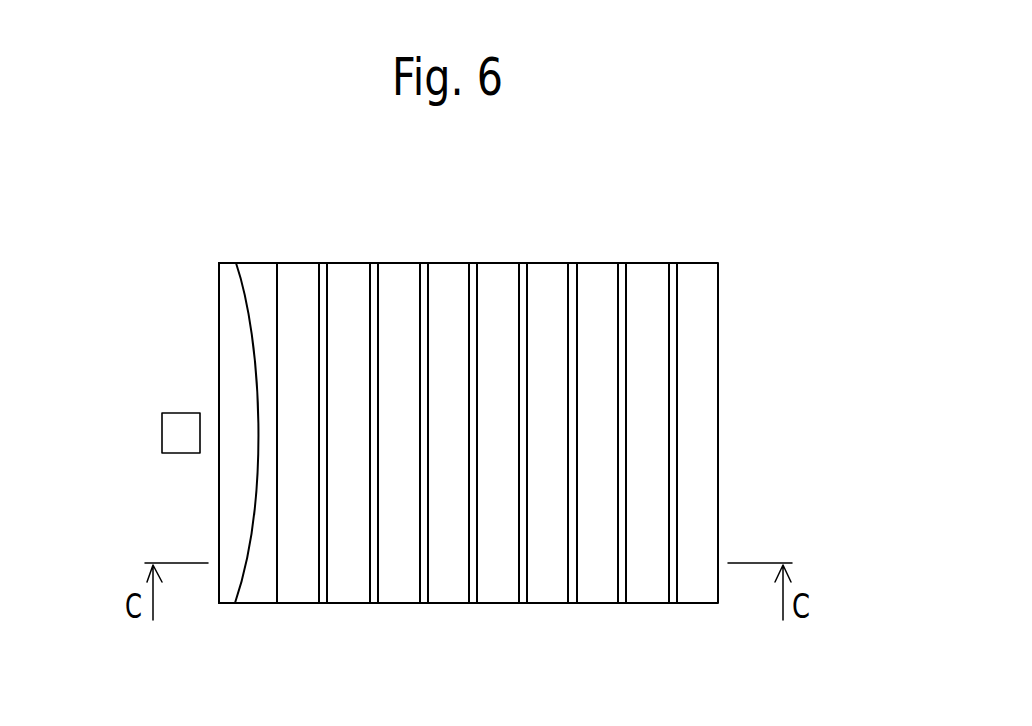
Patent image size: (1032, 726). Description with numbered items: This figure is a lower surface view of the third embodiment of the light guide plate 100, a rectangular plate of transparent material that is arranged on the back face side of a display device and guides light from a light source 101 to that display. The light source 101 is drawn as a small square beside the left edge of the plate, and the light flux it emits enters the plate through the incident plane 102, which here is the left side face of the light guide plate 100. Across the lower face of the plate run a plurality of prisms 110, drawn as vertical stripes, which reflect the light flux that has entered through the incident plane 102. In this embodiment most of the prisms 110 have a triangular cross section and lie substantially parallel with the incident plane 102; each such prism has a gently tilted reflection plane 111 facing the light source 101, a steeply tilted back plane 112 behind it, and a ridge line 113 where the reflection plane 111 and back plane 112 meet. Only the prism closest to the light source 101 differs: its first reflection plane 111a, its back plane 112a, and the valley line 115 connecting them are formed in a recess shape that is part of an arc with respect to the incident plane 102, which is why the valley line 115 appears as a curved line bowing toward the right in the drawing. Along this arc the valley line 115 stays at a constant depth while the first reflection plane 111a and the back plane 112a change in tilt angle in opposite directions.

The light guide plate 100 is at (747, 232).
The light source 101 is at (172, 432).
The incident plane 102 is at (217, 313).
The prism 110 is at (712, 365).
The reflection plane 111 is at (345, 272).
The first reflection plane 111a is at (227, 278).
The back plane 112 is at (425, 278).
The back plane 112a is at (260, 277).
The ridge line 113 is at (530, 292).
The valley line 115 is at (257, 380).